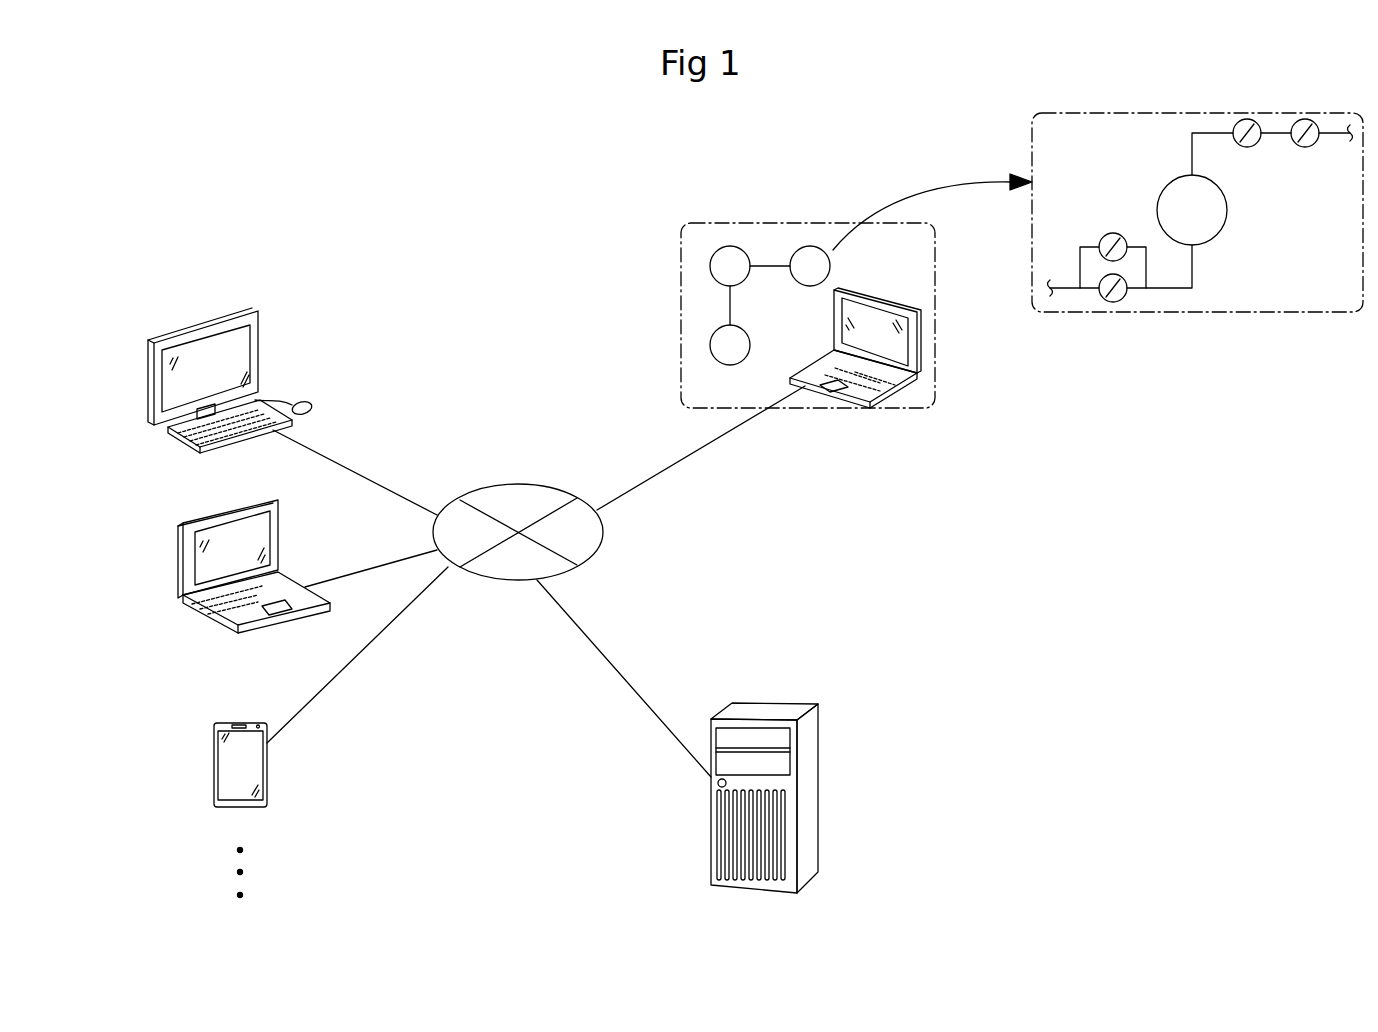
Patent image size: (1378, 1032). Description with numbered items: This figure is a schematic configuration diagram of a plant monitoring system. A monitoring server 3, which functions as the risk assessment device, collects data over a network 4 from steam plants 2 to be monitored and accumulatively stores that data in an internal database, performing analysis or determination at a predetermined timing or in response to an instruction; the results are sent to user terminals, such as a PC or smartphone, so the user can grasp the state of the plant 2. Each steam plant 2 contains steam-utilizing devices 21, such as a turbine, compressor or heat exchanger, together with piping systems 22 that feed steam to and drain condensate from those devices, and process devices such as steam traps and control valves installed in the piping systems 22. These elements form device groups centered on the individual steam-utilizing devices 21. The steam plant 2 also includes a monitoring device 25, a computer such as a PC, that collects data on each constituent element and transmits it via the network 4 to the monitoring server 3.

The steam plant 2 is at (681, 310).
The monitoring server 3 is at (783, 703).
The network 4 is at (517, 484).
The steam-utilizing device 21 is at (1227, 218).
The piping system 22 is at (1192, 156).
The monitoring device 25 is at (920, 343).